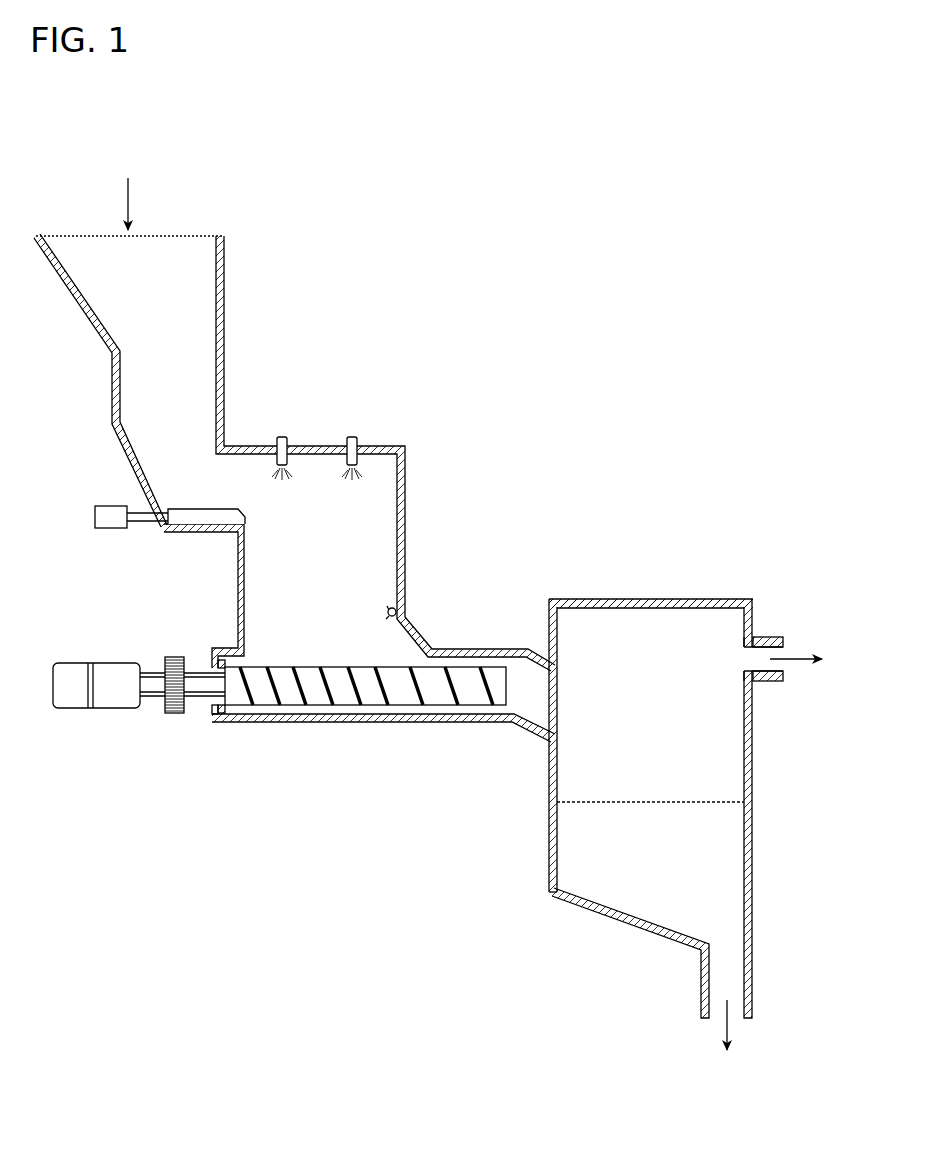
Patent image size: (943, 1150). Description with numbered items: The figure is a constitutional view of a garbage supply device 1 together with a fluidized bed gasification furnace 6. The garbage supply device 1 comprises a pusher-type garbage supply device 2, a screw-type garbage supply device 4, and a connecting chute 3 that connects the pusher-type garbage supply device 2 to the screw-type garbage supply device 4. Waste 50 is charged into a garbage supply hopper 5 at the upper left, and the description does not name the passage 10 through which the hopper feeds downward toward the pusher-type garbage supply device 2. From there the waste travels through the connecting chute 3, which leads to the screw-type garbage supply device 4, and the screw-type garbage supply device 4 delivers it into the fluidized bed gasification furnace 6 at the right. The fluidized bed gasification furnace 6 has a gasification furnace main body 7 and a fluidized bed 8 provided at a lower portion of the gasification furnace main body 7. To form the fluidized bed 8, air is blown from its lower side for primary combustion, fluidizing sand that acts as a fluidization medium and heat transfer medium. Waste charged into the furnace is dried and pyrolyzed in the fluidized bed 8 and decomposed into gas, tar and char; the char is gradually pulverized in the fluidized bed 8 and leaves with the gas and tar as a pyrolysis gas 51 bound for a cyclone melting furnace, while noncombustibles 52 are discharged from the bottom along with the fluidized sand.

The garbage supply device 1 is at (445, 440).
The pusher-type garbage supply device 2 is at (167, 541).
The connecting chute 3 is at (410, 543).
The screw-type garbage supply device 4 is at (311, 732).
The garbage supply hopper 5 is at (224, 288).
The fluidized bed gasification furnace 6 is at (649, 839).
The gasification furnace main body 7 is at (644, 600).
The fluidized bed 8 is at (708, 844).
The chute 10 is at (120, 462).
The waste 50 is at (131, 188).
The pyrolysis gas 51 is at (801, 659).
The noncombustibles 52 is at (728, 1040).